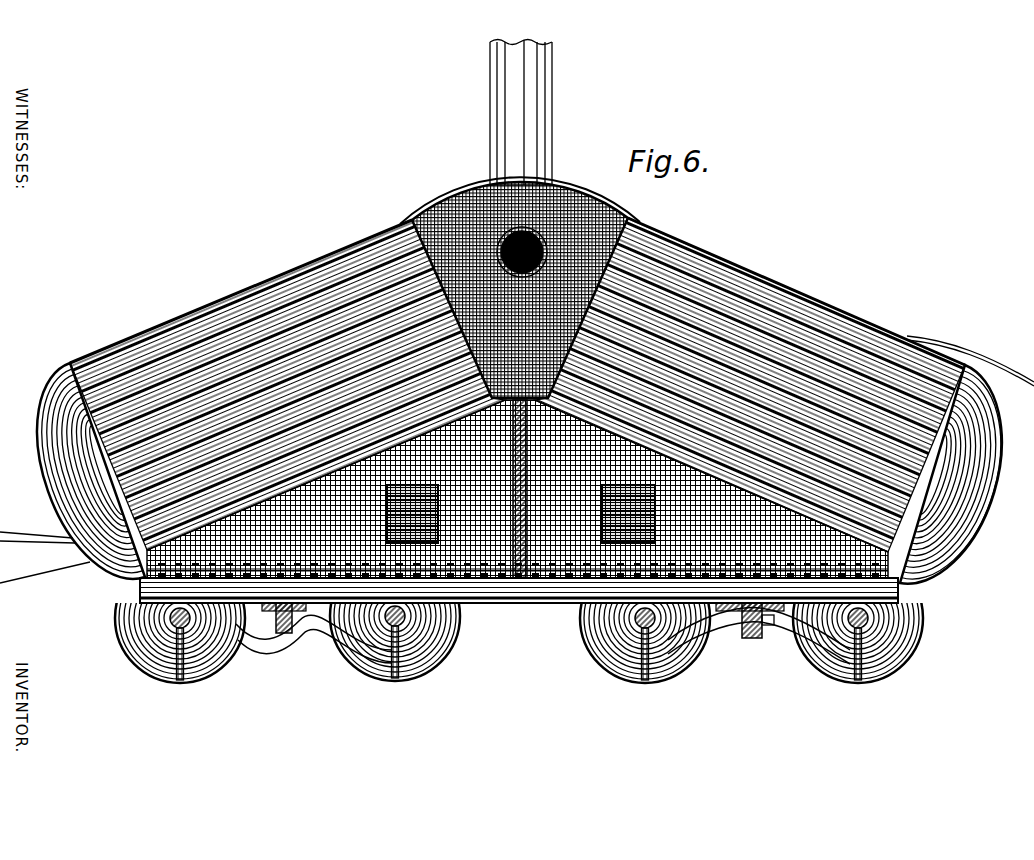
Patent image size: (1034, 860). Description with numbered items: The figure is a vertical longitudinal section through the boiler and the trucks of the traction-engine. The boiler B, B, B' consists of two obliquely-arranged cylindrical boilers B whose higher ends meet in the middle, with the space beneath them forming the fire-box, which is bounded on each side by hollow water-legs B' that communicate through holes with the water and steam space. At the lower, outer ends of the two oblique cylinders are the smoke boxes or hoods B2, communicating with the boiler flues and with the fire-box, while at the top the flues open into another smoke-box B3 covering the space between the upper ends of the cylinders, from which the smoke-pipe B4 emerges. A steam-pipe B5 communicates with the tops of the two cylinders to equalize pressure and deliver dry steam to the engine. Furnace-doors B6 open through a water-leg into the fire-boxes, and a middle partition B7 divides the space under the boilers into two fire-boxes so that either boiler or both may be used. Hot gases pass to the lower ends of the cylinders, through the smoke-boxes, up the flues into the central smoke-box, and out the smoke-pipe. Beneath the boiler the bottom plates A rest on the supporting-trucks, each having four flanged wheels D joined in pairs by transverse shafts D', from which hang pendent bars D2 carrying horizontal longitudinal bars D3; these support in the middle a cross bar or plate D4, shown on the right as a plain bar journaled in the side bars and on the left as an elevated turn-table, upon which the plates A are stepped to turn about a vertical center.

The bottom plate A is at (722, 593).
The boiler B is at (552, 385).
The water-leg B' is at (517, 489).
The smoke-box B2 is at (42, 460).
The upper smoke-box B3 is at (513, 364).
The smoke-pipe B4 is at (548, 111).
The steam-pipe B5 is at (546, 243).
The furnace-door B6 is at (438, 530).
The middle partition B7 is at (513, 462).
The flanged wheel D is at (517, 617).
The transverse shaft D' is at (515, 643).
The pendent bar D2 is at (172, 670).
The horizontal longitudinal bar D3 is at (245, 650).
The cross bar D4 is at (756, 632).